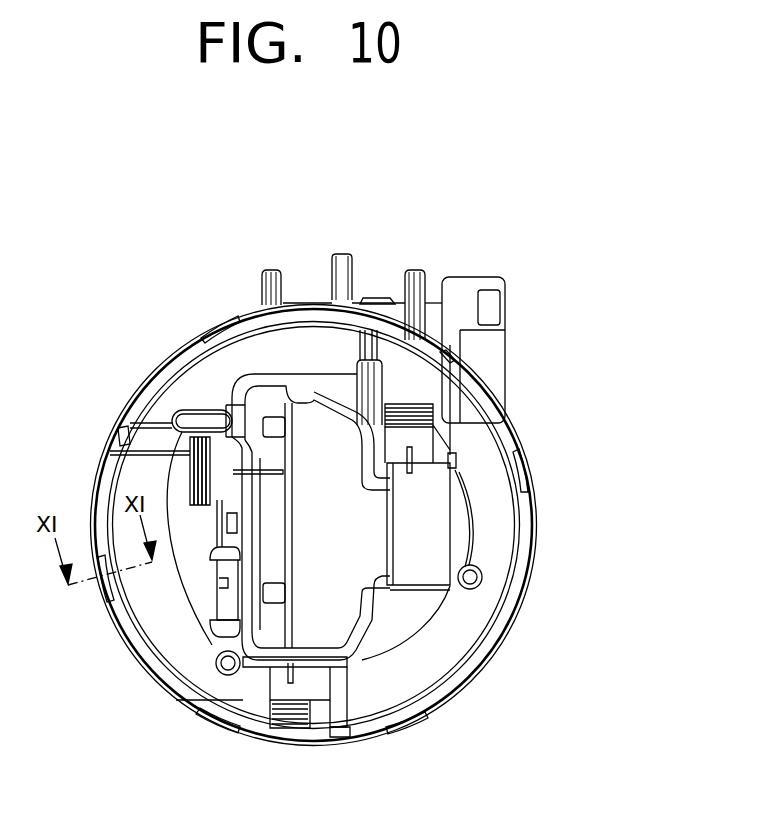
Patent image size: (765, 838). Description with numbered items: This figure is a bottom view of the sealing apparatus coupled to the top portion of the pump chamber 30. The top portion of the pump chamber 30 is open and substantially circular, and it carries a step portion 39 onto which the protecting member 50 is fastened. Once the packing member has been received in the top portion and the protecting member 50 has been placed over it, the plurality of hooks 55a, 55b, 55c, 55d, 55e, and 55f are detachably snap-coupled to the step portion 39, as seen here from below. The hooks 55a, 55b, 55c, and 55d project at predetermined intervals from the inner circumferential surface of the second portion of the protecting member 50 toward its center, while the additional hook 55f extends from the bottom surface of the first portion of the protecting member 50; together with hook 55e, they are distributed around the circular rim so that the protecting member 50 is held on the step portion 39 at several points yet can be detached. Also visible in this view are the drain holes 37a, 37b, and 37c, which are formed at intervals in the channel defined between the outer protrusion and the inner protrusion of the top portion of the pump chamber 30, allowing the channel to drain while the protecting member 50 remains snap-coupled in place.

The pump chamber 30 is at (509, 312).
The step portion 39 is at (172, 682).
The protecting member 50 is at (540, 527).
The drain hole 37a is at (335, 740).
The drain hole 37b is at (450, 350).
The drain hole 37c is at (122, 433).
The hook 55a is at (222, 328).
The hook 55b is at (106, 592).
The hook 55c is at (218, 723).
The hook 55d is at (408, 726).
The hook 55e is at (518, 470).
The additional hook 55f is at (375, 298).